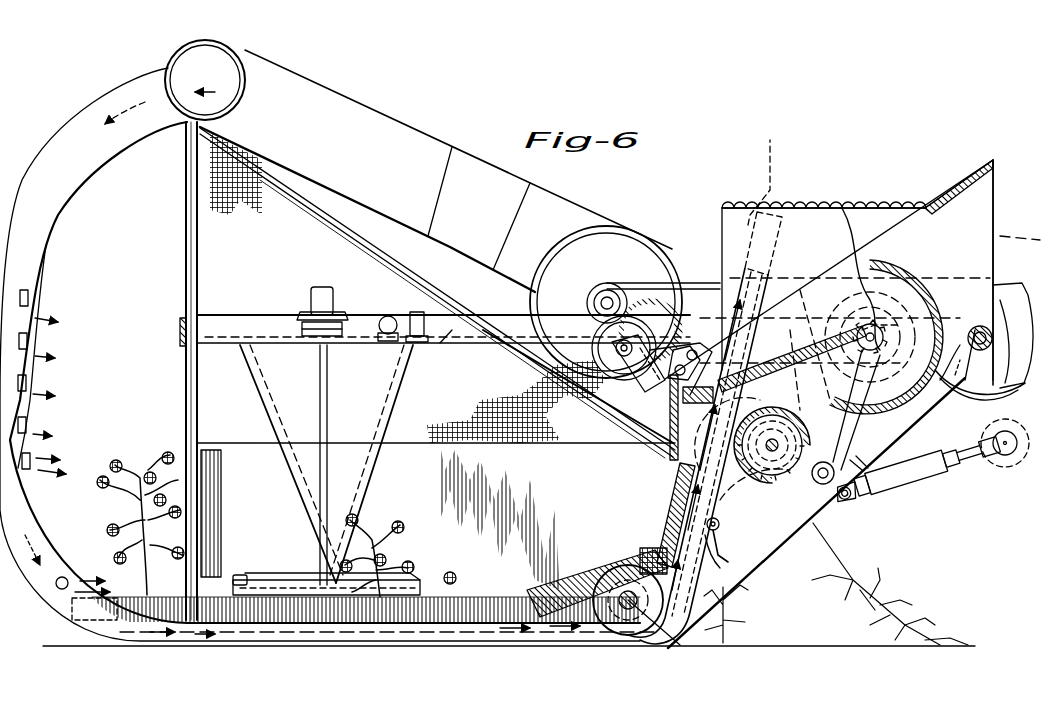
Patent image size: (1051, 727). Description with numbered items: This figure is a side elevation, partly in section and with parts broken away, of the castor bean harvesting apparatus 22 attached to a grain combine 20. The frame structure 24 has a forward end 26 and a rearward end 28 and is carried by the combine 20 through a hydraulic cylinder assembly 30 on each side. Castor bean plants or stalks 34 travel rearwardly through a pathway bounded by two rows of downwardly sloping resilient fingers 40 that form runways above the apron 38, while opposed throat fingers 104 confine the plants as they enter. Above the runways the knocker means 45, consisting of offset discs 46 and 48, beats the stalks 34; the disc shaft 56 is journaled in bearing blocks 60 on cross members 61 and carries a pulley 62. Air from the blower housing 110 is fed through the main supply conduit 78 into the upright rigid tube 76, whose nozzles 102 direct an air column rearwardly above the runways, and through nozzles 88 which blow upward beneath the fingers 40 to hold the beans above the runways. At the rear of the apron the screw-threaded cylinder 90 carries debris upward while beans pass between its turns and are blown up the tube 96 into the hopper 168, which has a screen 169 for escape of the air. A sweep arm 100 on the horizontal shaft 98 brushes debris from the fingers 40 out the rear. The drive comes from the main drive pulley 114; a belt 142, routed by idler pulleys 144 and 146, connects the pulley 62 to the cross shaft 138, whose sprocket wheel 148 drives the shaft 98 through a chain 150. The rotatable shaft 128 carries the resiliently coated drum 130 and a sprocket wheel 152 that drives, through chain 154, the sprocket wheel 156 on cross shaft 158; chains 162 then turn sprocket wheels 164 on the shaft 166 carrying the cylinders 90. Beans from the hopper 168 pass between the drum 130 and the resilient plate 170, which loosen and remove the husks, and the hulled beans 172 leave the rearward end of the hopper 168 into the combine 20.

The combine 20 is at (1010, 472).
The castor bean harvesting apparatus 22 is at (684, 195).
The frame structure 24 is at (181, 235).
The forward end 26 is at (48, 152).
The rearward end 28 is at (994, 205).
The hydraulic cylinder assembly 30 is at (920, 474).
The castor bean plants or stalks 34 is at (128, 523).
The apron 38 is at (300, 624).
The resilient fingers 40 is at (487, 592).
The knocker means 45 is at (362, 560).
The disc 46 is at (238, 573).
The disc 48 is at (285, 573).
The shaft 56 is at (328, 414).
The bearing blocks 60 is at (326, 343).
The cross members 61 is at (310, 340).
The pulley 62 is at (335, 312).
The rigid tube 76 is at (42, 264).
The main supply conduit 78 is at (180, 45).
The nozzle 88 is at (366, 643).
The cylinder 90 is at (612, 580).
The tube 96 is at (758, 306).
The horizontally disposed shaft 98 is at (720, 524).
The sweep arm 100 is at (735, 563).
The nozzles 102 is at (30, 452).
The resilient fingers 104 is at (223, 514).
The blower housing 110 is at (655, 254).
The main drive pulley 114 is at (1006, 397).
The rotatable shaft 128 is at (878, 322).
The resiliently coated drum 130 is at (935, 287).
The cross shaft 138 is at (616, 349).
The belt 142 is at (380, 315).
The idler pulley 144 is at (424, 318).
The idler pulley 146 is at (375, 354).
The sprocket wheel 148 is at (620, 374).
The chain 150 is at (603, 388).
The sprocket wheel 152 is at (860, 352).
The chain 154 is at (850, 432).
The sprocket wheel 156 is at (795, 472).
The cross shaft 158 is at (780, 442).
The chains 162 is at (648, 566).
The sprocket wheels 164 is at (628, 612).
The shaft 166 is at (660, 632).
The hopper 168 is at (840, 246).
The screen 169 is at (798, 206).
The resilient plate 170 is at (940, 392).
The beans 172 is at (958, 347).